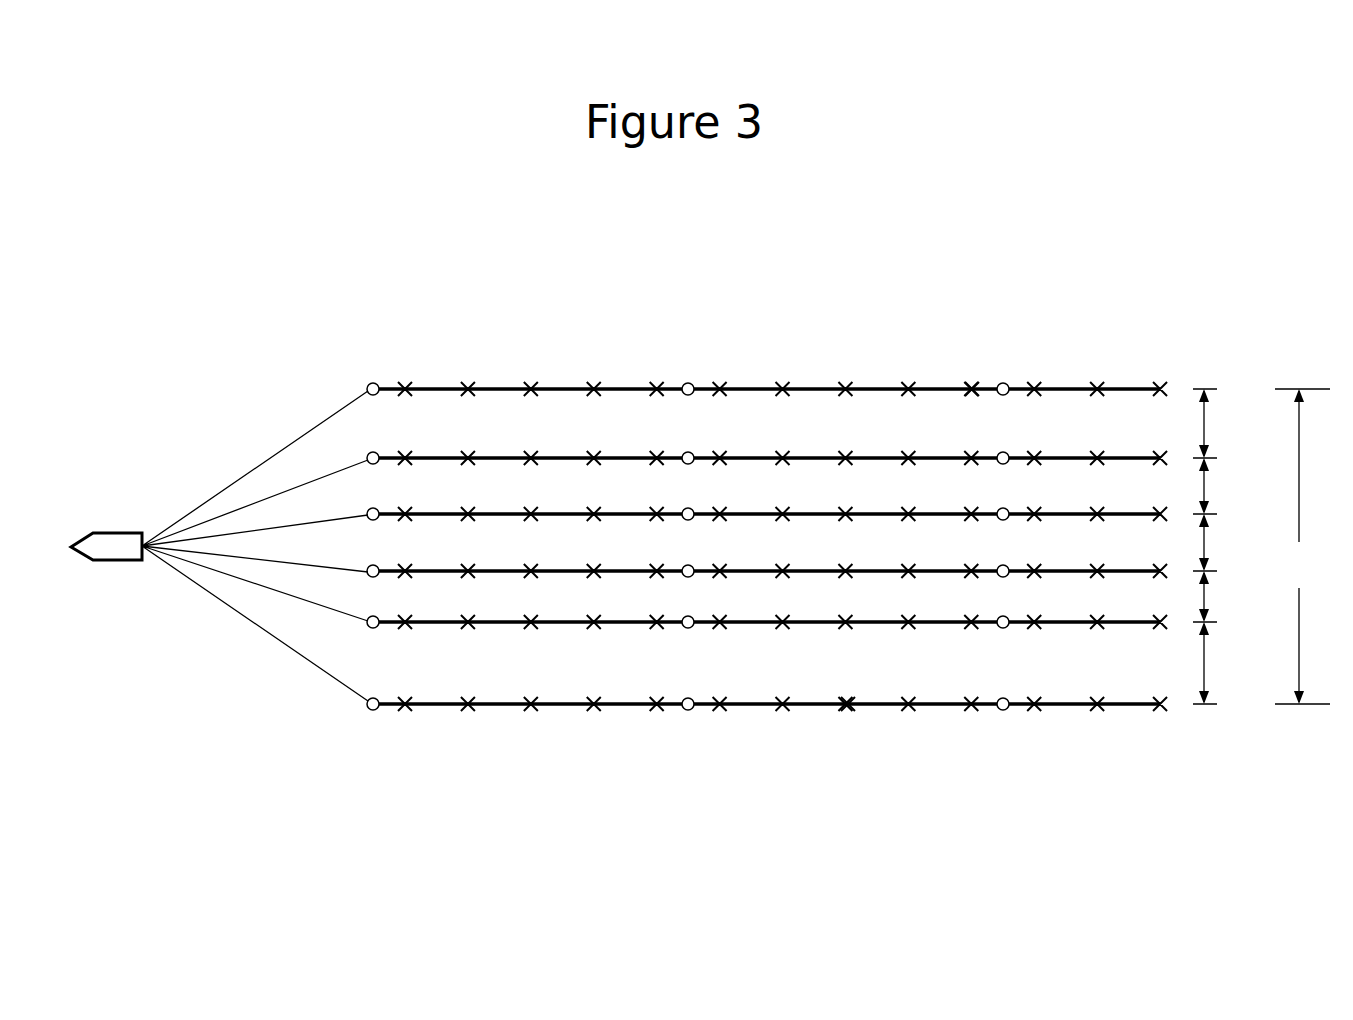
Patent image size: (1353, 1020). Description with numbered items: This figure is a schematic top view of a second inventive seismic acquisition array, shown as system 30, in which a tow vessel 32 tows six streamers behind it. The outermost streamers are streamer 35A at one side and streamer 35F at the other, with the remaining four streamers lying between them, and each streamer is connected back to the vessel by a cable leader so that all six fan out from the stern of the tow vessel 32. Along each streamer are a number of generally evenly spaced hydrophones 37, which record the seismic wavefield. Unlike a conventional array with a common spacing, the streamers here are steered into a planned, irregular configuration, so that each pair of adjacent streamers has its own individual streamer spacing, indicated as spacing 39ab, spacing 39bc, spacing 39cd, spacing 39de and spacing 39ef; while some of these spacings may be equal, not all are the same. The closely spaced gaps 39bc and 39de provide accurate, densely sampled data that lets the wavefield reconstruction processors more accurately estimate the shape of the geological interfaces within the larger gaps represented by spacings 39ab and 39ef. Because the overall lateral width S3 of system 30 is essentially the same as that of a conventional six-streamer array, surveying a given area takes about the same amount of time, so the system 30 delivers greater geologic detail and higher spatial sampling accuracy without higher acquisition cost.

The system 30 is at (935, 298).
The tow vessel 32 is at (104, 546).
The streamer 35A is at (495, 387).
The streamer 35F is at (495, 702).
The hydrophones 37 is at (972, 387).
The streamer spacing 39ab is at (1205, 427).
The streamer spacing 39bc is at (1205, 487).
The streamer spacing 39cd is at (1205, 543).
The streamer spacing 39de is at (1205, 619).
The streamer spacing 39ef is at (1205, 683).
The lateral width S3 is at (1302, 546).